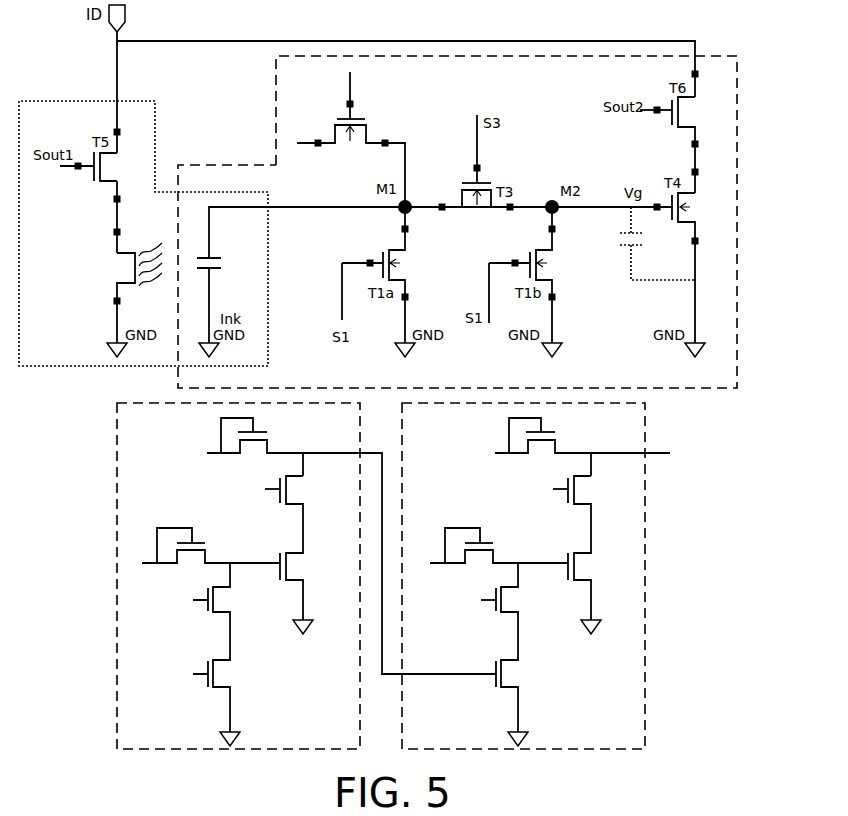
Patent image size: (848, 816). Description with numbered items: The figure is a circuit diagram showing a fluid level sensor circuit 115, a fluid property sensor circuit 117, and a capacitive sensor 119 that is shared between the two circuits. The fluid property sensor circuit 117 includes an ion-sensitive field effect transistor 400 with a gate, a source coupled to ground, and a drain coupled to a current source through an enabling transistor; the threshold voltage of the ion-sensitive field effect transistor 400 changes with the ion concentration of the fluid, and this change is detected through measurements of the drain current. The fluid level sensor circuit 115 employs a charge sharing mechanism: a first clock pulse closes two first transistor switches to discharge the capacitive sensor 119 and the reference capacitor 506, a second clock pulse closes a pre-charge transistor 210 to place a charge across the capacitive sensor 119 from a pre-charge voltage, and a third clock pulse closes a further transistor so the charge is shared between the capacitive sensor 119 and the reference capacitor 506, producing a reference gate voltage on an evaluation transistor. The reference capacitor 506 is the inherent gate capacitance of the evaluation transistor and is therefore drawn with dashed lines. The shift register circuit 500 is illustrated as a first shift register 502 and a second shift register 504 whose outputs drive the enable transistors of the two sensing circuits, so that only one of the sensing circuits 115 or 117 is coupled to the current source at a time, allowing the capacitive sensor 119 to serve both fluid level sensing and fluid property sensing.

The fluid level sensor circuit 115 is at (722, 56).
The fluid property sensor circuit 117 is at (62, 101).
The capacitive sensor 119 is at (228, 275).
The precharge transistor T2 210 is at (370, 109).
The ion-sensitive field effect transistor 400 is at (86, 270).
The shift register circuit 500 is at (94, 415).
The first shift register 502 is at (227, 576).
The second shift register 504 is at (536, 576).
The reference capacitor 506 is at (618, 276).